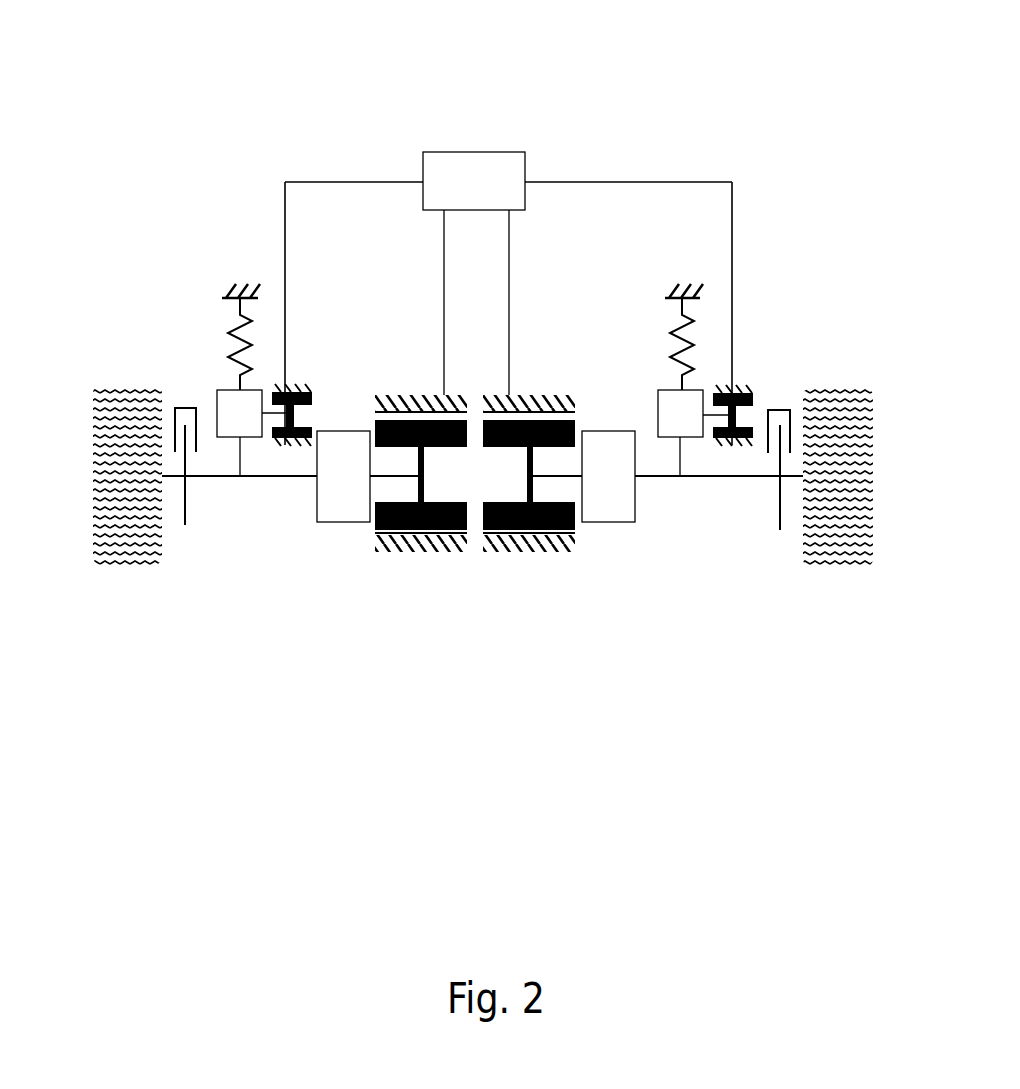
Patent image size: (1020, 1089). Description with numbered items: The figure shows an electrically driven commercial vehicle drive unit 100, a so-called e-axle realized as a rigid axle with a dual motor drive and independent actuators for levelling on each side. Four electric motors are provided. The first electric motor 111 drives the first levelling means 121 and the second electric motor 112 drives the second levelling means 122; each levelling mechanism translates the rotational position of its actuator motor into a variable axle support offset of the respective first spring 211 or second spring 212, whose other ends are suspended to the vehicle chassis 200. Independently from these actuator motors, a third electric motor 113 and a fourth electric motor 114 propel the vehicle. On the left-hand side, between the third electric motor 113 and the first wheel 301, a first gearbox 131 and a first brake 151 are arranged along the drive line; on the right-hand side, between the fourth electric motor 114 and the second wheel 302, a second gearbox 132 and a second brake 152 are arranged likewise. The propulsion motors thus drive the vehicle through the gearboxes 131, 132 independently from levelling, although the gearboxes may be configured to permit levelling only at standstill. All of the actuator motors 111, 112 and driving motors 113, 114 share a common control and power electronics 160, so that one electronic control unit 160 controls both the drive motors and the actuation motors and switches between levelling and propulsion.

The drive unit 100 is at (257, 136).
The electronic control unit 160 is at (504, 152).
The vehicle chassis 200 is at (249, 280).
The first spring 211 is at (233, 332).
The second spring 212 is at (712, 335).
The first wheel 301 is at (121, 385).
The second wheel 302 is at (843, 565).
The first brake 151 is at (185, 525).
The second brake 152 is at (780, 530).
The first levelling means 121 is at (240, 476).
The second levelling means 122 is at (666, 390).
The first electric motor 111 is at (294, 388).
The second electric motor 112 is at (756, 394).
The first gearbox 131 is at (338, 523).
The second gearbox 132 is at (617, 431).
The third electric motor 113 is at (418, 552).
The fourth electric motor 114 is at (535, 552).